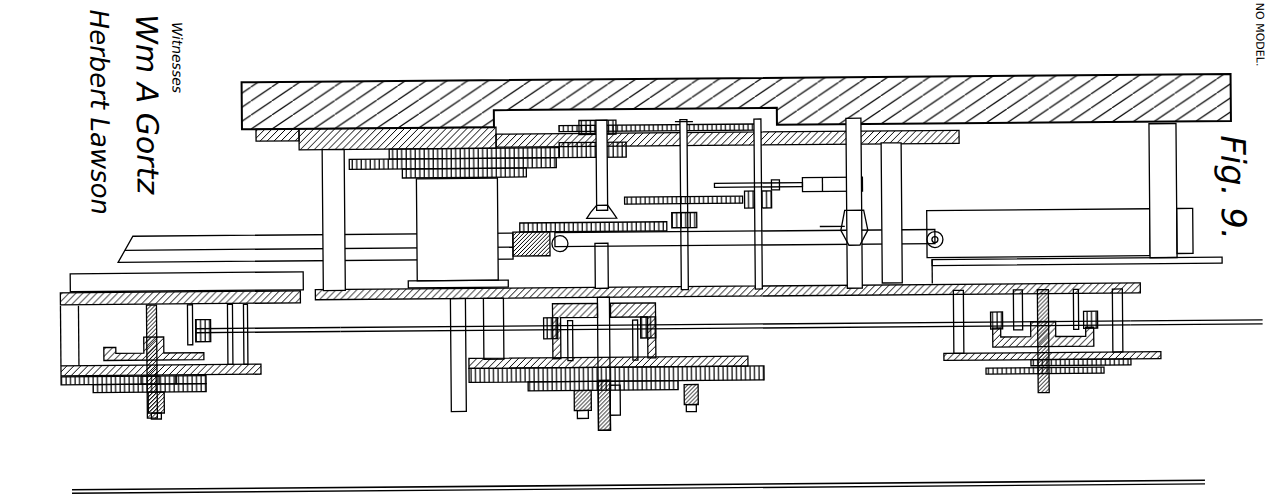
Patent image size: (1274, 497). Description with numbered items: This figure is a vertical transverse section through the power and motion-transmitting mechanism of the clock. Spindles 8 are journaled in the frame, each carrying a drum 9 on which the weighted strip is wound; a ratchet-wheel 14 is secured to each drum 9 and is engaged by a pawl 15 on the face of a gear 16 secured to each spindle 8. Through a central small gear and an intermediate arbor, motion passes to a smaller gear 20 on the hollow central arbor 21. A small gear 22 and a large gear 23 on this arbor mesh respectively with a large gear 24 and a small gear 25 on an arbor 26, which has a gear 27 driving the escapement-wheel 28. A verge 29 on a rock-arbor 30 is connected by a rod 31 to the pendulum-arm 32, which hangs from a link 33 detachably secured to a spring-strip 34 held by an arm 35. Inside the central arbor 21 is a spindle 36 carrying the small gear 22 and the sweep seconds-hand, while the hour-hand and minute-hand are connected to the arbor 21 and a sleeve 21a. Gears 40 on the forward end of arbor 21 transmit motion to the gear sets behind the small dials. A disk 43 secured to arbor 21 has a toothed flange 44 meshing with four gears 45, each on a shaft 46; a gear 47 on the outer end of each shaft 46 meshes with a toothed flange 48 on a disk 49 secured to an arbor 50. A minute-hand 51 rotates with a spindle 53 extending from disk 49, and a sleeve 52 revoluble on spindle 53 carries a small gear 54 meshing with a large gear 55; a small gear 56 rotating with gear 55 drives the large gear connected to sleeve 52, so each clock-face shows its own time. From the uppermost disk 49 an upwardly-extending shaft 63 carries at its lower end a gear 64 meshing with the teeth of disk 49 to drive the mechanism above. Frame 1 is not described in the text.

The frame 1 is at (651, 264).
The spindle 8 is at (453, 385).
The drum 9 is at (457, 233).
The ratchet-wheel 14 is at (497, 176).
The pawl 15 is at (545, 177).
The gear 16 is at (560, 157).
The smaller gear 20 is at (612, 150).
The central arbor 21 is at (607, 250).
The sleeve 21a is at (612, 416).
The small gear 22 is at (597, 120).
The large gear 23 is at (673, 218).
The large gear 24 is at (713, 126).
The small gear 25 is at (735, 224).
The arbor 26 is at (690, 200).
The gear 27 is at (689, 212).
The escapement-wheel 28 is at (778, 190).
The verge 29 is at (832, 182).
The rock-arbor 30 is at (864, 188).
The rod 31 is at (812, 232).
The pendulum-arm 32 is at (262, 247).
The link 33 is at (938, 232).
The spring-strip 34 is at (1098, 220).
The arm 35 is at (1150, 166).
The spindle 36 is at (603, 432).
The gears 40 is at (565, 381).
The disk 43 is at (612, 317).
The toothed flange 44 is at (548, 316).
The gear 45 is at (693, 382).
The shaft 46 is at (333, 327).
The gear 47 is at (210, 335).
The toothed flange 48 is at (208, 348).
The disk 49 is at (118, 347).
The arbor 50 is at (150, 313).
The minute-hand 51 is at (193, 380).
The sleeve 52 is at (166, 390).
The spindle 53 is at (157, 407).
The small gear 54 is at (143, 380).
The large gear 55 is at (66, 375).
The small gear 56 is at (100, 381).
The shaft 63 is at (1170, 329).
The gear 64 is at (1133, 352).